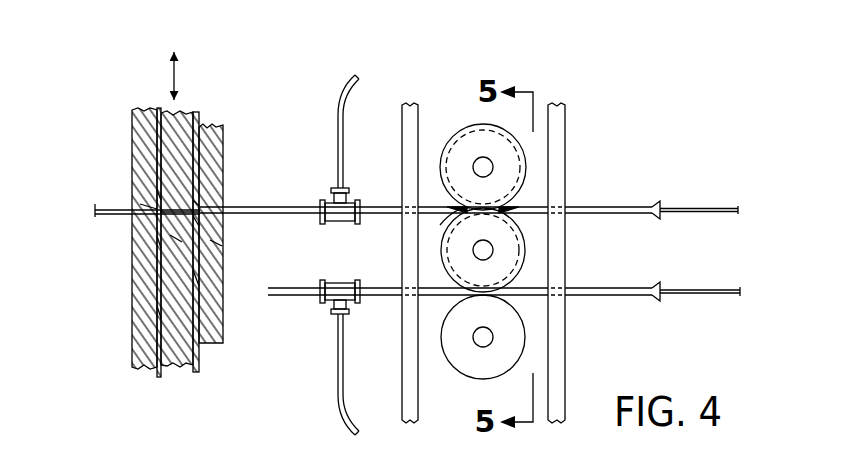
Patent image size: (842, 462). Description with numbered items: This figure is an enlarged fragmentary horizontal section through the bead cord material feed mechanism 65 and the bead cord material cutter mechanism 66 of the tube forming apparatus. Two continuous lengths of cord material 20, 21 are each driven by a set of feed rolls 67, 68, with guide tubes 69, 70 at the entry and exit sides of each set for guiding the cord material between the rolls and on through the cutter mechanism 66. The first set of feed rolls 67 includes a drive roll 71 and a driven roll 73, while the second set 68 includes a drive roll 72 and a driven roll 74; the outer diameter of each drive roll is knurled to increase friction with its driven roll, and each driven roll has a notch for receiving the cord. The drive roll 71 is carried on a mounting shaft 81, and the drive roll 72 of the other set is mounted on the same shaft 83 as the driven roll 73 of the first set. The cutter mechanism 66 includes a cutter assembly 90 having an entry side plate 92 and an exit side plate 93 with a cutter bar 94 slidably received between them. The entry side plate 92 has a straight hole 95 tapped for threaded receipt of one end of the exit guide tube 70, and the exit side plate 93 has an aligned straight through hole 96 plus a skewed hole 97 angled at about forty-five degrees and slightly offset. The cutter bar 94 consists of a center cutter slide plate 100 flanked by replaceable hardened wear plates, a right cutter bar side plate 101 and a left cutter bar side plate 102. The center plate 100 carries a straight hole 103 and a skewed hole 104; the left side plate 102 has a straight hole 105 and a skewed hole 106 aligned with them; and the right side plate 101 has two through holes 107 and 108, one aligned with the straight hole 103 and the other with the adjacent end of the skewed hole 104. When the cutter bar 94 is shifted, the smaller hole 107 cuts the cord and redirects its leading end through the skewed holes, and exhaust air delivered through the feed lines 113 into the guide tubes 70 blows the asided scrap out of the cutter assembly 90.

The cord material 20 is at (717, 203).
The cord material 21 is at (711, 288).
The bead cord material feed mechanism 65 is at (477, 74).
The bead cord material cutter mechanism 66 is at (218, 104).
The set of feed rolls 67 is at (525, 221).
The set of feed rolls 68 is at (531, 317).
The guide tube 69 is at (630, 175).
The guide tube 70 is at (292, 206).
The drive roll 71 is at (480, 156).
The drive roll 72 is at (455, 292).
The driven roll 73 is at (450, 222).
The driven roll 74 is at (457, 355).
The mounting shaft 81 is at (477, 162).
The shaft 83 is at (475, 254).
The cutter assembly 90 is at (121, 109).
The entry side plate 92 is at (208, 323).
The exit side plate 93 is at (138, 348).
The cutter bar 94 is at (200, 375).
The straight hole 95 is at (198, 209).
The straight through hole 96 is at (146, 206).
The skewed hole 97 is at (195, 221).
The center cutter slide plate 100 is at (177, 362).
The right cutter bar side plate 101 is at (196, 278).
The left cutter bar side plate 102 is at (160, 312).
The straight hole 103 is at (159, 164).
The skewed hole 104 is at (176, 238).
The straight hole 105 is at (158, 196).
The skewed hole 106 is at (160, 242).
The through hole 107 is at (198, 204).
The through hole 108 is at (216, 243).
The feed line 113 is at (344, 125).